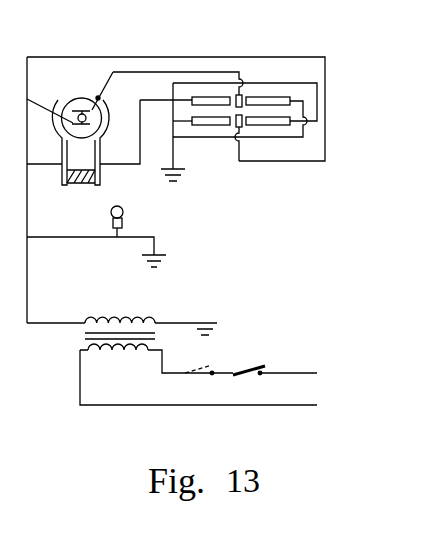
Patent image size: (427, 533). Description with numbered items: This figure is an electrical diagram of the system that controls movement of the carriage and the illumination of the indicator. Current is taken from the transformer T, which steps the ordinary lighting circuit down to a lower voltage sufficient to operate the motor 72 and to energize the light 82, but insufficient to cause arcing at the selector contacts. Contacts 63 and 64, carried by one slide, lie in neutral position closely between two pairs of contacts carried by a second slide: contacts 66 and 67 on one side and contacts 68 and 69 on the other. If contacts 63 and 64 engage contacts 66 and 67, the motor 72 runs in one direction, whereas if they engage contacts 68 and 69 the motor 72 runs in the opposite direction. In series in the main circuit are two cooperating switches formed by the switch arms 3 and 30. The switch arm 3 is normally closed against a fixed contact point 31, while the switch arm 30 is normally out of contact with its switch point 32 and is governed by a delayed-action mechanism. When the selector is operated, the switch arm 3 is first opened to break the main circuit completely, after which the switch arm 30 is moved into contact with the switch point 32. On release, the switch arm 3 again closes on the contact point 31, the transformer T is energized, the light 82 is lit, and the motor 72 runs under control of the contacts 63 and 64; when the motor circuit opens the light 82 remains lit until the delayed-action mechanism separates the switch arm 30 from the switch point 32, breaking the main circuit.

The motor 72 is at (78, 96).
The contact 66 is at (220, 100).
The contact 67 is at (222, 122).
The contact 63 is at (240, 95).
The contact 64 is at (237, 127).
The contact 68 is at (258, 100).
The contact 69 is at (258, 122).
The light 82 is at (128, 215).
The transformer T is at (100, 317).
The switch arm 3 is at (202, 377).
The switch arm 30 is at (245, 368).
The fixed contact point 31 is at (212, 376).
The switch point 32 is at (260, 375).